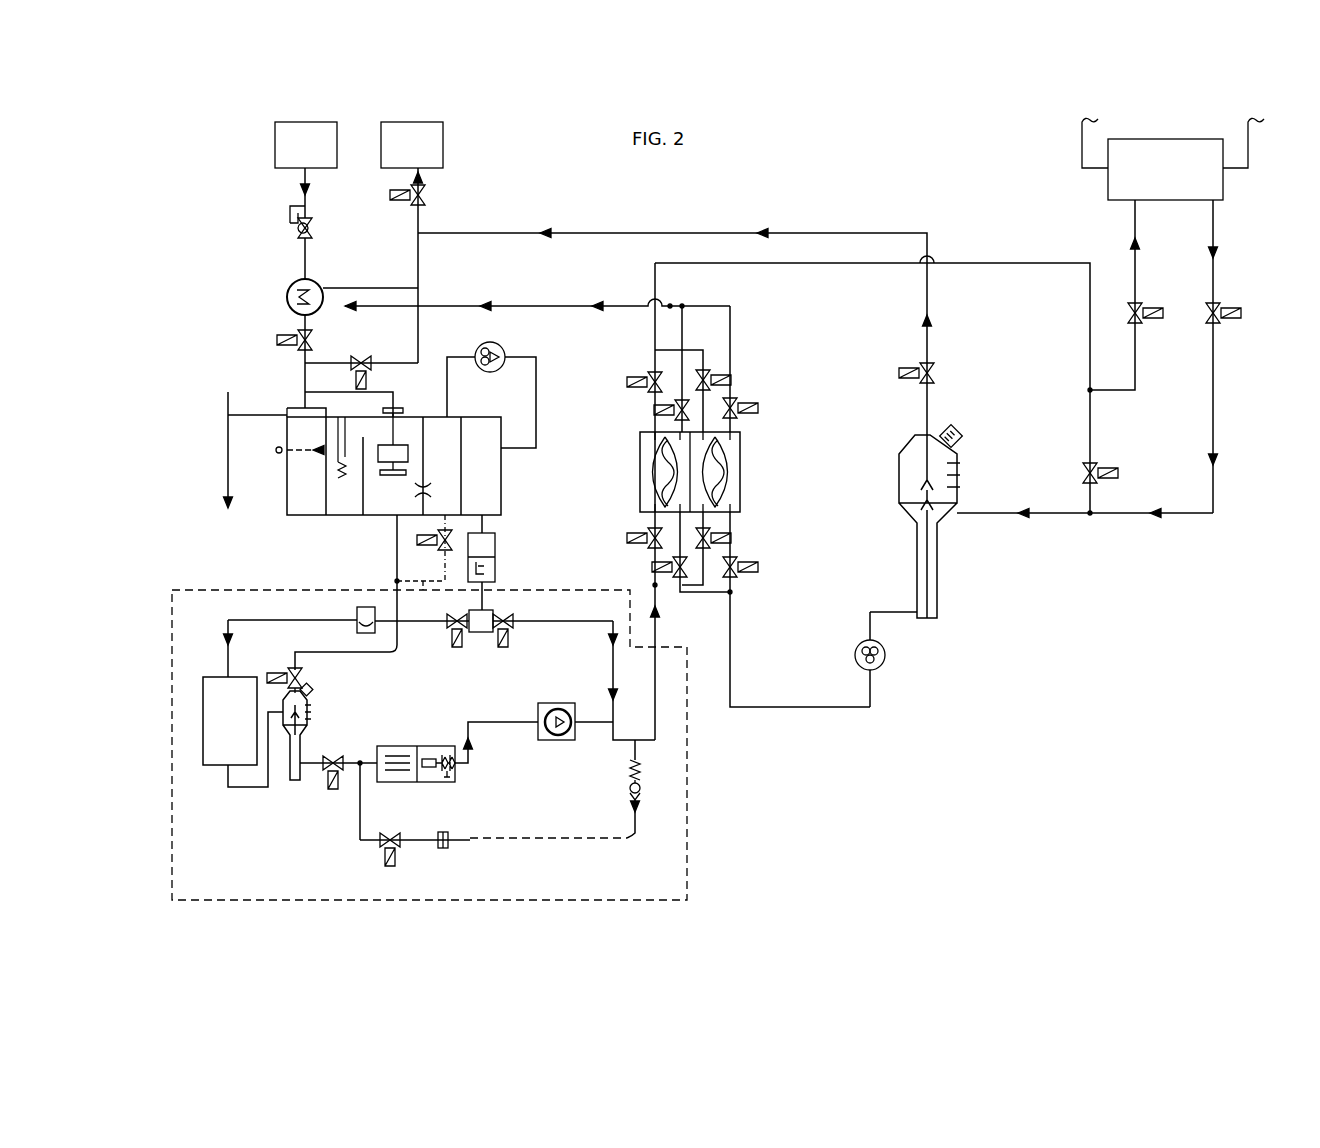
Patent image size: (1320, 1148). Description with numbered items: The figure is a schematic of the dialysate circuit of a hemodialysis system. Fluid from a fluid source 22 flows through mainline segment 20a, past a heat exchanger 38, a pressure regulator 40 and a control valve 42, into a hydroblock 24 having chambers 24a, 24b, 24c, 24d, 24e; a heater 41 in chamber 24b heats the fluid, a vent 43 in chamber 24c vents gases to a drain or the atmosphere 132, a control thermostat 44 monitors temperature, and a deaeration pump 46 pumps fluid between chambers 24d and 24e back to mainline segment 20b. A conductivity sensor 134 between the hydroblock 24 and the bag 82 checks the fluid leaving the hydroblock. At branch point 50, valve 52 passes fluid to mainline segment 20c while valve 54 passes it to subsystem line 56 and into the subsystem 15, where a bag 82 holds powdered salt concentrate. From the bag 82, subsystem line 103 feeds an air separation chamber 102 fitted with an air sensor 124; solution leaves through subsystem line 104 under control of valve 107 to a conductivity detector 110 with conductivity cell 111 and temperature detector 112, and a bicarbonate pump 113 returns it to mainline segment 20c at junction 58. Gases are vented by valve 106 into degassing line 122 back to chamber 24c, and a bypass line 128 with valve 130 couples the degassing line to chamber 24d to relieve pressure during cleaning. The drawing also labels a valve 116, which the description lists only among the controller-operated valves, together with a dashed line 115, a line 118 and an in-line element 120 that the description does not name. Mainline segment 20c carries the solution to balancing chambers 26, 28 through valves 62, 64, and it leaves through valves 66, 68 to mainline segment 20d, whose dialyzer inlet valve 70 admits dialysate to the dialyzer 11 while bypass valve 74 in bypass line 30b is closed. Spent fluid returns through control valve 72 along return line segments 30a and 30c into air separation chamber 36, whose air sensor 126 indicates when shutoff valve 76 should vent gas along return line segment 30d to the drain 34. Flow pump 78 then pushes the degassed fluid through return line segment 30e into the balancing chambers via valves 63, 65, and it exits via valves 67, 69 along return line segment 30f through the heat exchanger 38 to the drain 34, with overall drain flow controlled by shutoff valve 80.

The dialyzer 11 is at (1173, 159).
The subsystem for preparing a salt solution 15 is at (308, 828).
The mainline segment 20a is at (300, 204).
The mainline segment 20b is at (485, 599).
The mainline segment 20c is at (555, 624).
The mainline segment 20d is at (800, 265).
The fluid source 22 is at (306, 145).
The hydroblock 24 is at (399, 453).
The chamber 24a is at (298, 478).
The chamber 24b is at (350, 500).
The chamber 24c is at (398, 500).
The chamber 24d is at (445, 500).
The chamber 24e is at (498, 494).
The balancing chamber 26 is at (638, 467).
The balancing chamber 28 is at (740, 467).
The return line segment 30a is at (1203, 408).
The bypass line 30b is at (1100, 497).
The return line segment 30c is at (972, 517).
The return line segment 30d is at (605, 233).
The return line segment 30e is at (920, 618).
The return line segment 30f is at (520, 305).
The drain 34 is at (412, 145).
The air separation chamber 36 is at (898, 480).
The heat exchanger 38 is at (288, 286).
The pressure regulator 40 is at (308, 234).
The heater 41 is at (342, 438).
The control valve 42 is at (290, 337).
The vent 43 is at (400, 407).
The control thermostat 44 is at (280, 456).
The deaeration pump 46 is at (505, 351).
The branch point 50 is at (480, 633).
The valve 52 is at (512, 630).
The valve 54 is at (452, 630).
The subsystem line 56 is at (365, 604).
The junction 58 is at (614, 722).
The valve 62 is at (633, 539).
The valve 63 is at (662, 580).
The valve 64 is at (720, 535).
The valve 65 is at (740, 565).
The valve 66 is at (636, 376).
The valve 67 is at (672, 402).
The valve 68 is at (716, 378).
The valve 69 is at (738, 402).
The dialyzer inlet valve 70 is at (1143, 306).
The control valve 72 is at (1226, 306).
The bypass valve 74 is at (1103, 468).
The shutoff valve 76 is at (939, 382).
The flow pump 78 is at (885, 660).
The shutoff valve 80 is at (408, 197).
The bag 82 is at (230, 692).
The air separation chamber 102 is at (310, 712).
The subsystem line 103 is at (248, 787).
The subsystem line 104 is at (330, 768).
The valve 106 is at (292, 672).
The valve 107 is at (345, 763).
The conductivity detector 110 is at (395, 790).
The conductivity cell 111 is at (395, 746).
The temperature detector 112 is at (452, 745).
The bicarbonate pump 113 is at (554, 702).
The return line 115 is at (486, 840).
The valve 116 is at (396, 832).
The line 118 is at (360, 841).
The orifice 120 is at (448, 832).
The degassing line 122 is at (308, 655).
The air sensor 124 is at (310, 686).
The air sensor 126 is at (960, 439).
The bypass line 128 is at (420, 568).
The valve 130 is at (450, 550).
The drain or atmosphere 132 is at (228, 505).
The conductivity sensor 134 is at (495, 548).